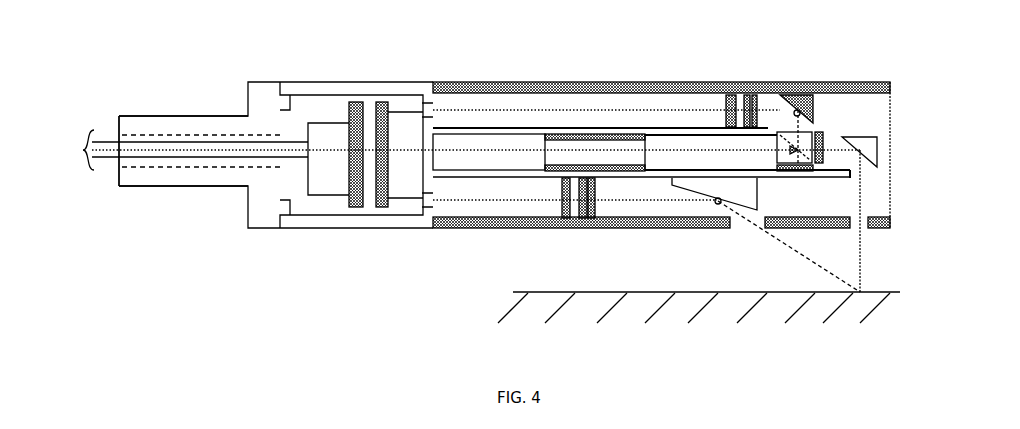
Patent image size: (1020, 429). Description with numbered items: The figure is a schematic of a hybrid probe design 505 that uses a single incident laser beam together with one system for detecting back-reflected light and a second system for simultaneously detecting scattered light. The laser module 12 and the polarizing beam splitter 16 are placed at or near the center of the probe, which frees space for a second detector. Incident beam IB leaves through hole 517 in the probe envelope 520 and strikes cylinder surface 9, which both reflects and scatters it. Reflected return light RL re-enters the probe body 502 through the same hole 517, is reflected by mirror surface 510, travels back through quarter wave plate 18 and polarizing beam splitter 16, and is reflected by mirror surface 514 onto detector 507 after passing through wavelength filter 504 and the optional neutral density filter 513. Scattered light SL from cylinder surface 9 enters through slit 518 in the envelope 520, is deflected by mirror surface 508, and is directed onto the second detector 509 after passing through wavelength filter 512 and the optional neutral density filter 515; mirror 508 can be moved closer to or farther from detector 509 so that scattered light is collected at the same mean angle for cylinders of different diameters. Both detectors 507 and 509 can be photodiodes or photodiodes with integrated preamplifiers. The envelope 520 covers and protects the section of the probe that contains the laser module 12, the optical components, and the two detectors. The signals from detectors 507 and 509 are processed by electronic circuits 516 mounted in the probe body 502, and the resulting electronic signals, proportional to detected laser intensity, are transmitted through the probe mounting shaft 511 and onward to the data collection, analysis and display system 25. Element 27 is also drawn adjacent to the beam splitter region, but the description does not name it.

The probe design 505 is at (500, 72).
The probe mounting shaft 511 is at (217, 186).
The data collection, analysis and display system 25 is at (459, 150).
The probe body 502 is at (357, 227).
The electronic circuits 516 is at (381, 98).
The probe envelope 520 is at (605, 87).
The hole 517 is at (865, 228).
The detector 507 is at (725, 102).
The neutral density filter 513 is at (743, 95).
The wavelength filter 504 is at (757, 95).
The reflected return light RL is at (768, 108).
The mirror surface 514 is at (800, 108).
The laser module 12 is at (557, 158).
The incident beam IB is at (747, 156).
The polarizing beam splitter 16 is at (777, 158).
The quarter wave plate 18 is at (823, 142).
The mirror surface 510 is at (863, 157).
The detector 27 is at (797, 173).
The mirror surface 508 is at (730, 200).
The scattered light SL is at (789, 246).
The slit 518 is at (743, 225).
The second detector 509 is at (560, 210).
The neutral density filter 515 is at (577, 213).
The wavelength filter 512 is at (597, 213).
The cylinder surface 9 is at (602, 287).